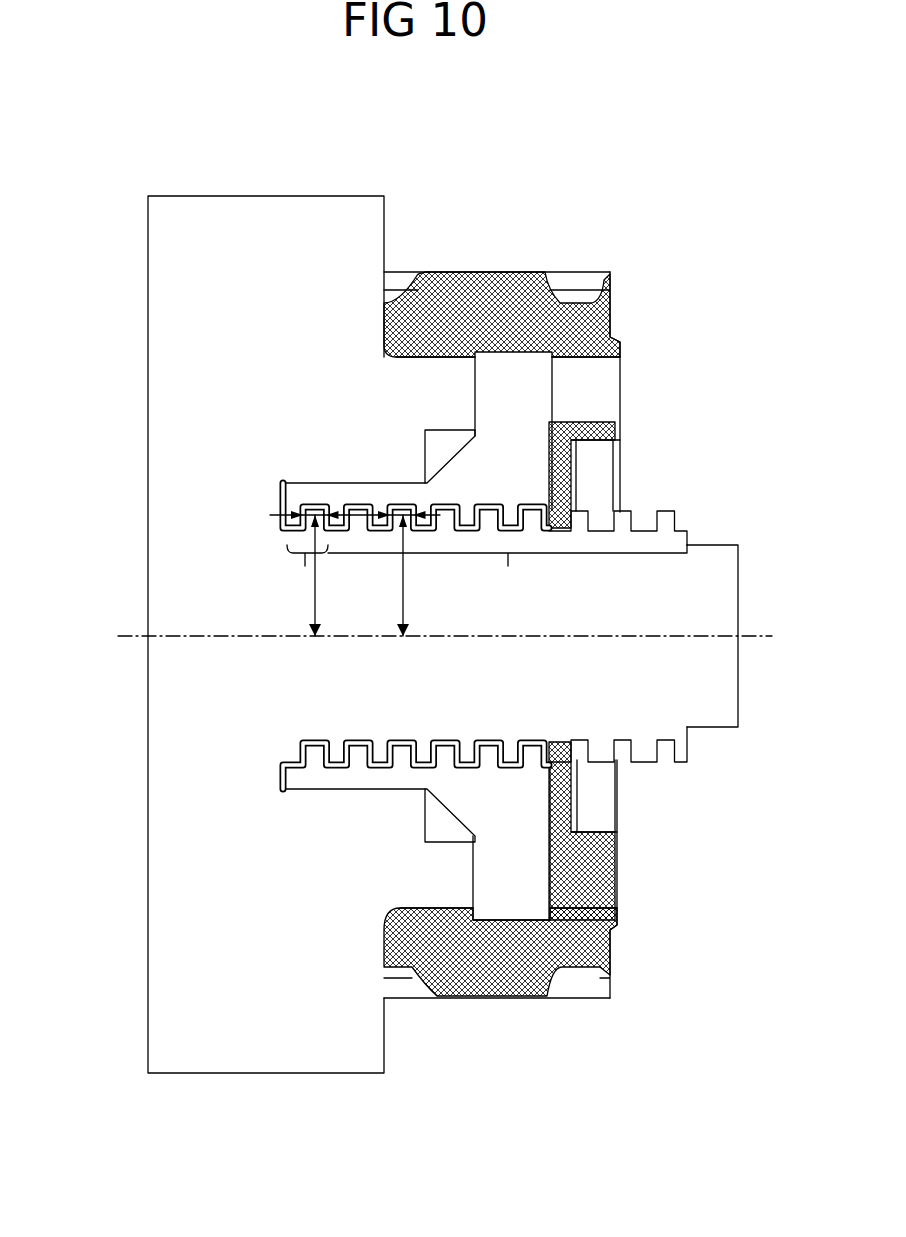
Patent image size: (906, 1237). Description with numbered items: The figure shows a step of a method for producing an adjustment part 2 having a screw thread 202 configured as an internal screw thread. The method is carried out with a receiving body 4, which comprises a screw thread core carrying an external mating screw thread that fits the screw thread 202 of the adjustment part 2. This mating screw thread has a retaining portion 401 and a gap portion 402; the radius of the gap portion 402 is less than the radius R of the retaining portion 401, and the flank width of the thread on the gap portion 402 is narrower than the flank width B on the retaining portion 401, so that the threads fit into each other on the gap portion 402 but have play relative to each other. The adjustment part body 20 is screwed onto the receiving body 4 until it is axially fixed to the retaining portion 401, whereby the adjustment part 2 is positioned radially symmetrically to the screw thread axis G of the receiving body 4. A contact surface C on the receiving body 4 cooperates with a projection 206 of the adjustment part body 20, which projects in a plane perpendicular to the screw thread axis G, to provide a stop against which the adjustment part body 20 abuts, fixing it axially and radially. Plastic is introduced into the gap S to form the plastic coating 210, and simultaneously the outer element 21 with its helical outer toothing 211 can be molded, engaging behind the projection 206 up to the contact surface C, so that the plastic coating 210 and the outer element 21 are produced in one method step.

The receiving body 4 is at (110, 738).
The adjustment part 2 is at (620, 258).
The outer element 21 is at (622, 337).
The outer toothing 211 is at (487, 285).
The plastic coating 210 is at (452, 505).
The screw thread 202 is at (428, 512).
The contact surface C is at (476, 403).
The projection 206 is at (527, 427).
The adjustment part body 20 is at (553, 453).
The gap S is at (541, 505).
The retaining portion 401 is at (308, 571).
The gap portion 402 is at (507, 636).
The flank width B is at (323, 508).
The radius R is at (315, 603).
The screw thread axis G is at (749, 636).